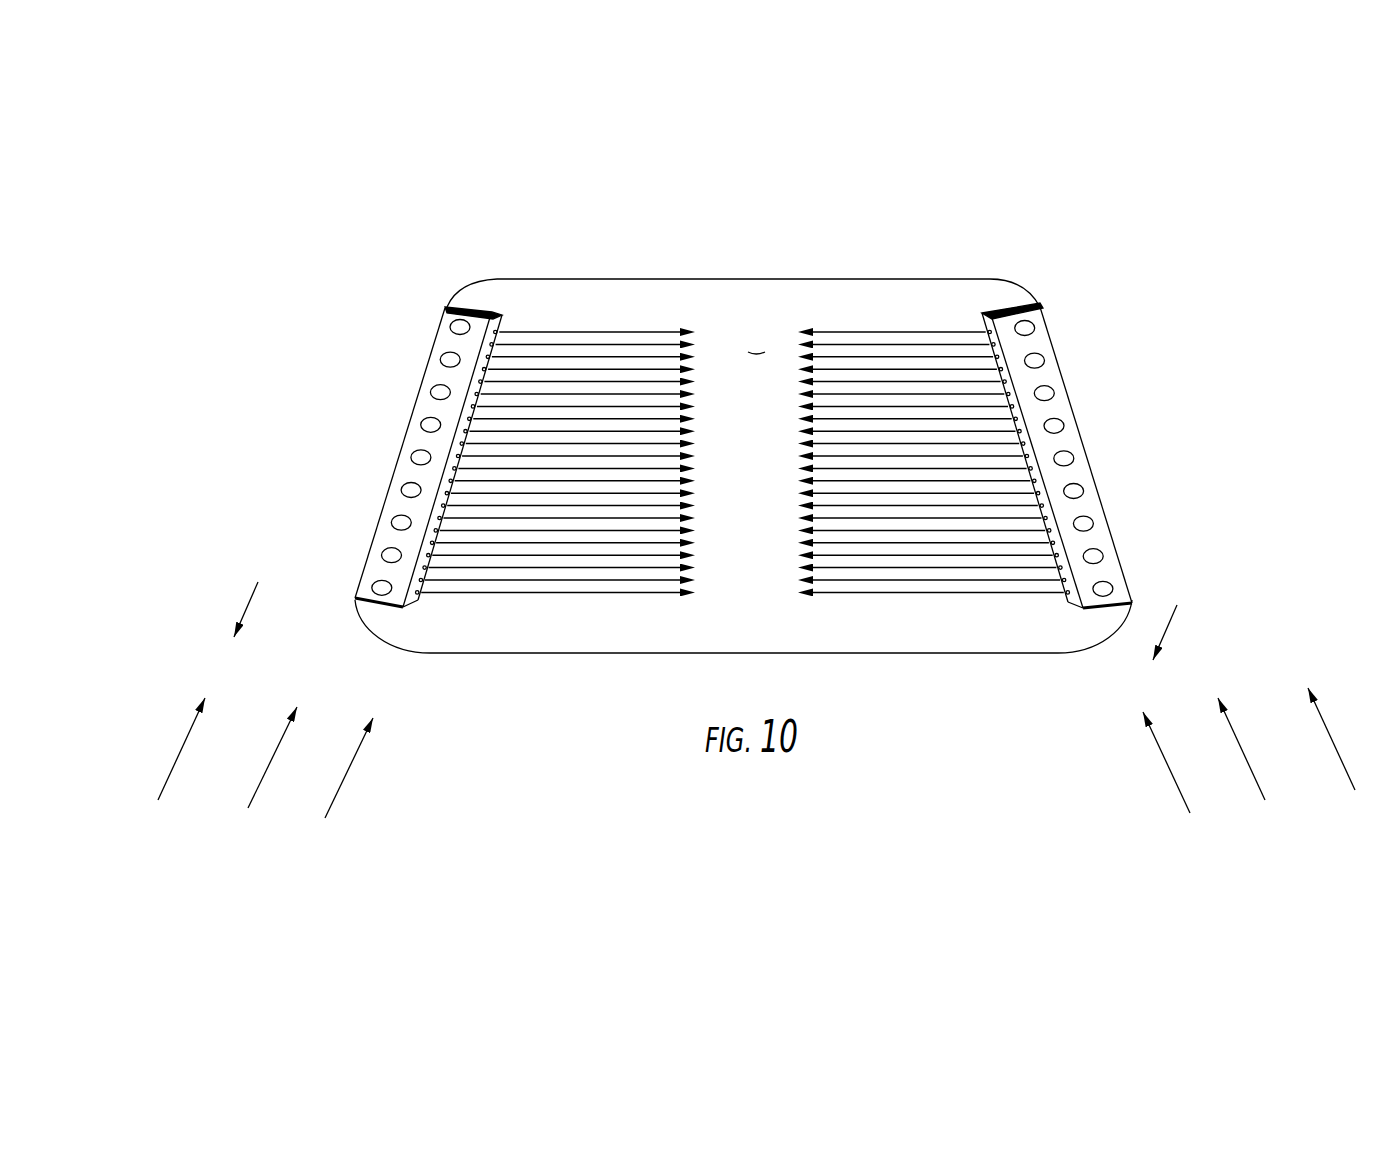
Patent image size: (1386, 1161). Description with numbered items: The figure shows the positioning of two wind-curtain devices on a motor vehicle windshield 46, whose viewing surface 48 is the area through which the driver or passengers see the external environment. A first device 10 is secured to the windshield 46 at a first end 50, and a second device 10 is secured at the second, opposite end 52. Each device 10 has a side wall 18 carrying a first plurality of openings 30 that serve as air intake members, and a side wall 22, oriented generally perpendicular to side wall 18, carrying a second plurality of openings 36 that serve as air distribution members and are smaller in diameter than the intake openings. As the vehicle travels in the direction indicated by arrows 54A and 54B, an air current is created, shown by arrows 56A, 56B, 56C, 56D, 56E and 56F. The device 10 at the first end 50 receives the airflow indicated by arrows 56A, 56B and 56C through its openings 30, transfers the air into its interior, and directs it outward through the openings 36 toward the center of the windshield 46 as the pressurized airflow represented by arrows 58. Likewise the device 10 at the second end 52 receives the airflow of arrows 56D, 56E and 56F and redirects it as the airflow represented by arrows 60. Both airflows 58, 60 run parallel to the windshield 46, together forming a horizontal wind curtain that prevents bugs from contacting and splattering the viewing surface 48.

The device 10 is at (472, 290).
The side wall 18 is at (445, 378).
The side wall 22 is at (508, 318).
The first plurality of openings 30 is at (403, 517).
The second plurality of openings 36 is at (980, 313).
The windshield 46 is at (716, 212).
The viewing surface 48 is at (756, 352).
The first end 50 is at (407, 422).
The second end 52 is at (1075, 415).
The arrow 54A is at (248, 605).
The arrow 54B is at (1170, 620).
The arrow 56A is at (171, 766).
The arrow 56B is at (265, 775).
The arrow 56C is at (341, 787).
The arrow 56D is at (1186, 788).
The arrow 56E is at (1261, 771).
The arrow 56F is at (1343, 762).
The arrows 58 is at (615, 333).
The arrows 60 is at (874, 333).